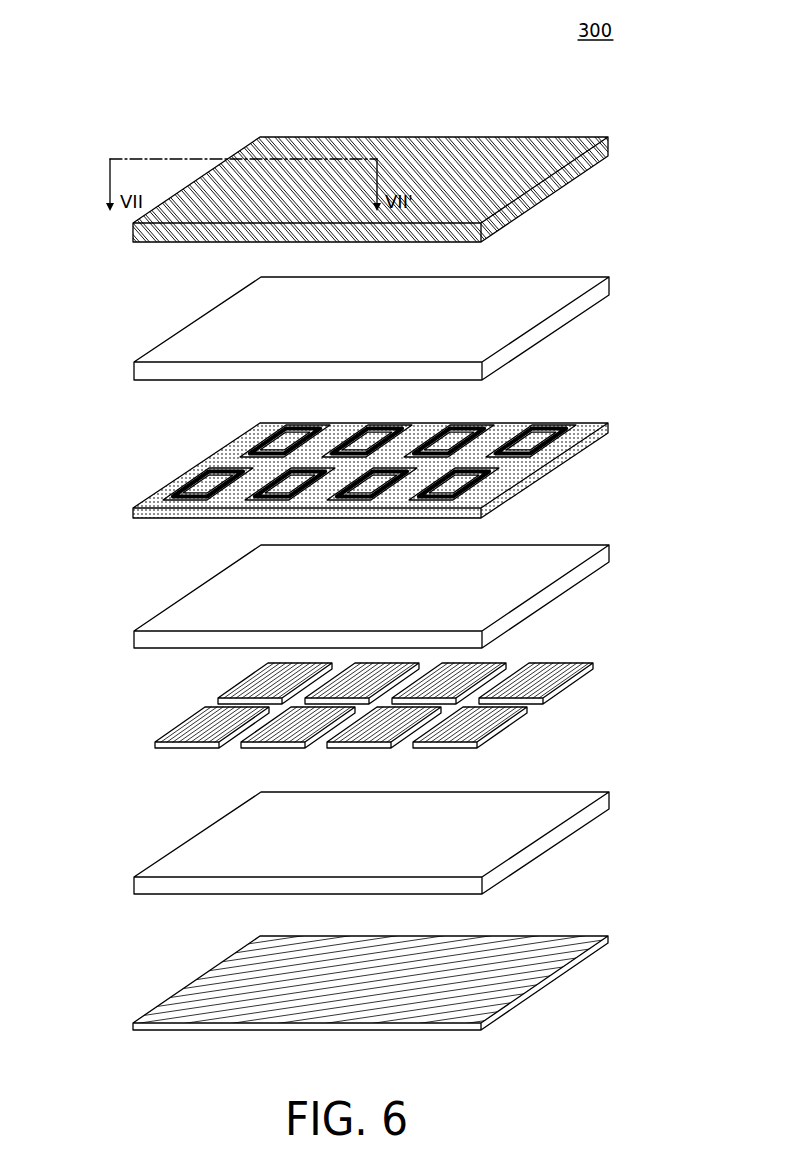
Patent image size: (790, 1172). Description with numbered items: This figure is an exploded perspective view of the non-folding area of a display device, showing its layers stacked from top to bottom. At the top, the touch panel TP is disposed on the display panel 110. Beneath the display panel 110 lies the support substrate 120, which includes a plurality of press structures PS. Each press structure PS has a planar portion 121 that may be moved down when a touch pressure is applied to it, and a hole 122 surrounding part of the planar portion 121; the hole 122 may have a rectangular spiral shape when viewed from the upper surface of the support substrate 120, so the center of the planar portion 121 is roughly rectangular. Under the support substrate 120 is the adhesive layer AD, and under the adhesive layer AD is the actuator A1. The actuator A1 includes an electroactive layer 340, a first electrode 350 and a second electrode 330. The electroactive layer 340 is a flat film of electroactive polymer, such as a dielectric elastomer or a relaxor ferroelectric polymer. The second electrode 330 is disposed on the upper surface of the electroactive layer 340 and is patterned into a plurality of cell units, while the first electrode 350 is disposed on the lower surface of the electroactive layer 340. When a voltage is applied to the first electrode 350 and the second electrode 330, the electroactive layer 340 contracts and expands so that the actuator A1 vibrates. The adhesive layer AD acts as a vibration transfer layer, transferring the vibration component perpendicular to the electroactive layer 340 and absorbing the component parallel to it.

The touch panel TP is at (607, 148).
The display panel 110 is at (608, 287).
The support substrate 120 is at (370, 482).
The planar portion 121 is at (157, 513).
The hole 122 is at (181, 488).
The press structure PS is at (320, 485).
The adhesive layer AD is at (608, 553).
The second electrode 330 is at (493, 723).
The electroactive layer 340 is at (608, 801).
The first electrode 350 is at (395, 984).
The actuator A1 is at (419, 884).